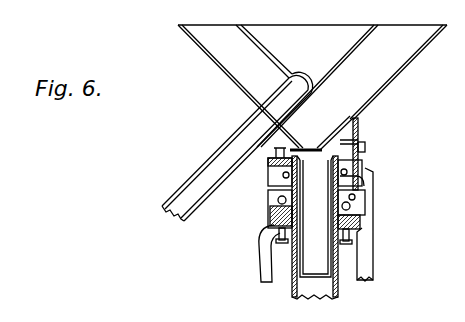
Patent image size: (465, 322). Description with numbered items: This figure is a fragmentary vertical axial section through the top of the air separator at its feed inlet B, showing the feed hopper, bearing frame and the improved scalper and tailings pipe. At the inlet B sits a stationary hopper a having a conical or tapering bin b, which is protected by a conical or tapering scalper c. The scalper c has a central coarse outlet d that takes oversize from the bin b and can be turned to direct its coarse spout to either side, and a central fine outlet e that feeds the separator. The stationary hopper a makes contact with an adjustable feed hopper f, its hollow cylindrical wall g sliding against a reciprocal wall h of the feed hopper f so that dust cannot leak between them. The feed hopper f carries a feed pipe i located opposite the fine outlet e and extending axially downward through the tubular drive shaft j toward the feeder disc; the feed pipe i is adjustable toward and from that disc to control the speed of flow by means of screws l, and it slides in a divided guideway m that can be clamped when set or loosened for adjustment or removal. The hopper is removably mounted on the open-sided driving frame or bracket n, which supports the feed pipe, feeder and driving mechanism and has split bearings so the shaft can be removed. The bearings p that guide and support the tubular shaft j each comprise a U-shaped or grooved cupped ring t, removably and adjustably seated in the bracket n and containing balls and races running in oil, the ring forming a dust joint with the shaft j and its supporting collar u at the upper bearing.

The feed inlet B is at (243, 86).
The stationary hopper a is at (335, 128).
The conical bin b is at (398, 71).
The scalper c is at (346, 54).
The coarse outlet d is at (192, 175).
The fine outlet e is at (325, 146).
The adjustable feed hopper f is at (315, 170).
The cylindrical wall g is at (359, 122).
The reciprocal wall h is at (366, 148).
The feed pipe i is at (326, 258).
The tubular drive shaft j is at (338, 278).
The screws l is at (285, 172).
The guideway m is at (364, 176).
The bracket n is at (370, 246).
The bearings p is at (266, 217).
The cupped ring t is at (362, 224).
The supporting collar u is at (366, 201).